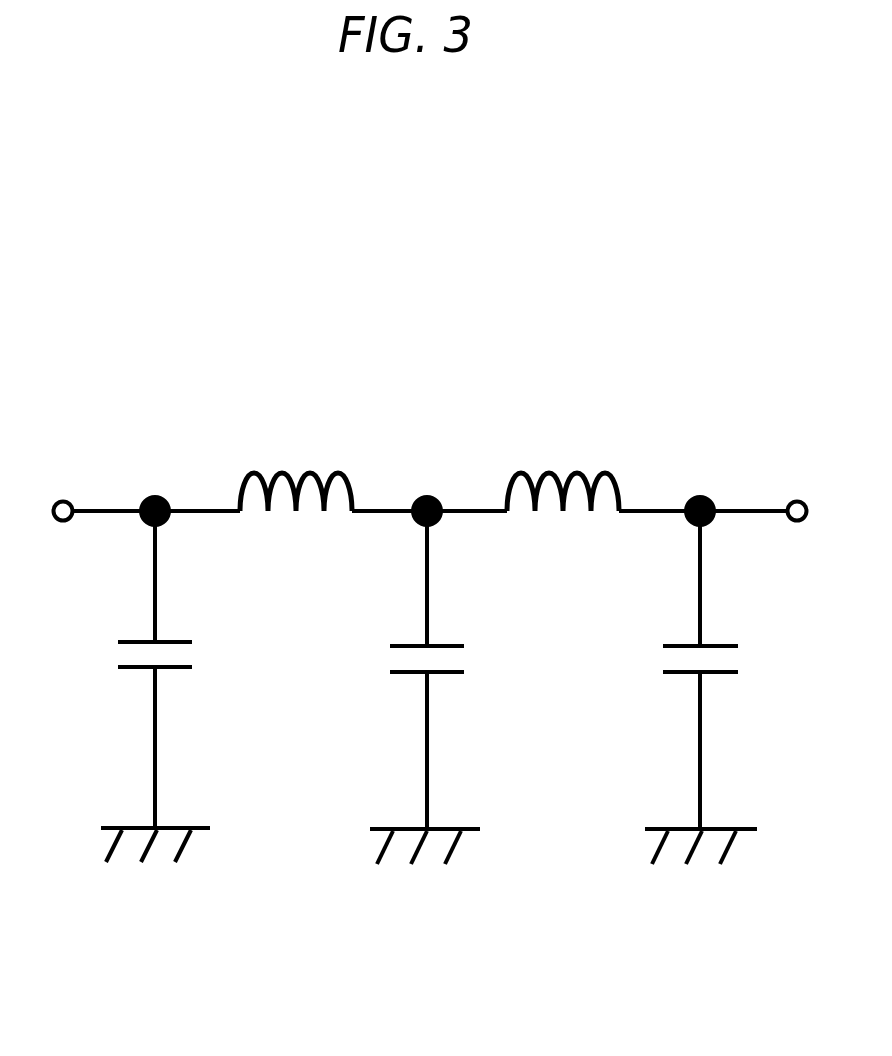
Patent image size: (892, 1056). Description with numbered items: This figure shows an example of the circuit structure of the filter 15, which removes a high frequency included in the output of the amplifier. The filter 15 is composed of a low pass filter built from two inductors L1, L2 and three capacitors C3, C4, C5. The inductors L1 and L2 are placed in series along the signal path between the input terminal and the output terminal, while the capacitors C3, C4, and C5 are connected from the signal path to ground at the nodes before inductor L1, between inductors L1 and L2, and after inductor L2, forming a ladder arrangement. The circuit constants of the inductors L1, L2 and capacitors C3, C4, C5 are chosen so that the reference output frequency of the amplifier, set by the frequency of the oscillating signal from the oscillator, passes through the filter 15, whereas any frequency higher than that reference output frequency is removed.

The filter 15 is at (456, 416).
The inductor L1 is at (296, 517).
The inductor L2 is at (563, 517).
The capacitor C3 is at (170, 686).
The capacitor C4 is at (442, 687).
The capacitor C5 is at (713, 687).